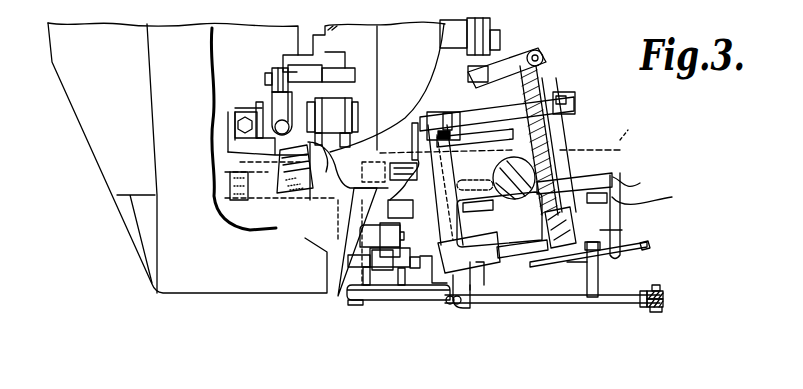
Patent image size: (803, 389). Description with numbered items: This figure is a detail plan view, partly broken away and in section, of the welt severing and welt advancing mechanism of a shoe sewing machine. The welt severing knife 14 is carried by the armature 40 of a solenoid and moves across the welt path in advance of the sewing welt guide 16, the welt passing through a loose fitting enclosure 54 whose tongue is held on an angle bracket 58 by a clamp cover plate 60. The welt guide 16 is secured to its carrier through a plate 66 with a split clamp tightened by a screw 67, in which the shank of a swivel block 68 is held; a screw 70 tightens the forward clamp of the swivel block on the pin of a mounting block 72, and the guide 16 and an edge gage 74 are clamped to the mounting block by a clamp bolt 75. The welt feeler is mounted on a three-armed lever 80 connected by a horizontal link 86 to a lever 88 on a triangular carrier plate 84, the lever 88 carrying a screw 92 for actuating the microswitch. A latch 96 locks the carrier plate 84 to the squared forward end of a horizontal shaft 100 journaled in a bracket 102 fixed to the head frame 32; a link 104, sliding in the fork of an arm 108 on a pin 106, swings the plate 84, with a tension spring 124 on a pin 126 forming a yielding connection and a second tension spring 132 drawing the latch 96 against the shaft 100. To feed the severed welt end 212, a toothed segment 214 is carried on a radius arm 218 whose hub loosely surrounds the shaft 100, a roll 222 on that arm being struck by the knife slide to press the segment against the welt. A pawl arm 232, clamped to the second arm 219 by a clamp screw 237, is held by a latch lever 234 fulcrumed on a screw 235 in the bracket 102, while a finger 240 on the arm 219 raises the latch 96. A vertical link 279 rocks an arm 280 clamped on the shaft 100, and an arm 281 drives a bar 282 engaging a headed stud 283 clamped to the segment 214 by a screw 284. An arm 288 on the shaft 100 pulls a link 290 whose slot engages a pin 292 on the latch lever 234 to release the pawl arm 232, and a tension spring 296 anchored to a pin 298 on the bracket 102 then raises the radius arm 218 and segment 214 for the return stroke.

The welt severing knife 14 is at (228, 154).
The sewing welt guide 16 is at (250, 222).
The head frame 32 is at (423, 93).
The armature 40 is at (640, 183).
The welt enclosure 54 is at (333, 180).
The angle bracket 58 is at (338, 72).
The cover plate 60 is at (335, 118).
The plate 66 is at (300, 46).
The screw 67 is at (272, 78).
The swivel block 68 is at (276, 105).
The screw 70 is at (240, 150).
The mounting block 72 is at (245, 118).
The edge gage 74 is at (238, 178).
The clamp bolt 75 is at (240, 115).
The three-armed lever 80 is at (377, 258).
The carrier plate 84 is at (398, 283).
The horizontal link 86 is at (400, 262).
The lever 88 is at (435, 322).
The screw 92 is at (447, 301).
The latch 96 is at (642, 249).
The horizontal shaft 100 is at (547, 255).
The bracket 102 is at (542, 95).
The link 104 is at (640, 300).
The pin 106 is at (660, 314).
The arm 108 is at (663, 292).
The tension spring 124 is at (597, 204).
The pin 126 is at (614, 283).
The tension spring 132 is at (587, 265).
The severed end of welt 212 is at (225, 203).
The welt advancing toothed segment 214 is at (547, 121).
The radius arm 218 is at (550, 143).
The second arm 219 is at (690, 193).
The roll 222 is at (600, 155).
The pawl arm 232 is at (490, 218).
The latch lever 234 is at (475, 308).
The screw 235 is at (402, 255).
The clamp screw 237 is at (620, 215).
The finger 240 is at (622, 230).
The vertical link 279 is at (438, 60).
The arm 280 is at (490, 65).
The arm 281 is at (556, 98).
The bar 282 is at (510, 113).
The headed stud 283 is at (445, 95).
The screw 284 is at (636, 124).
The arm 288 is at (500, 260).
The link 290 is at (478, 270).
The pin 292 is at (482, 290).
The tension spring 296 is at (432, 117).
The pin 298 is at (340, 188).